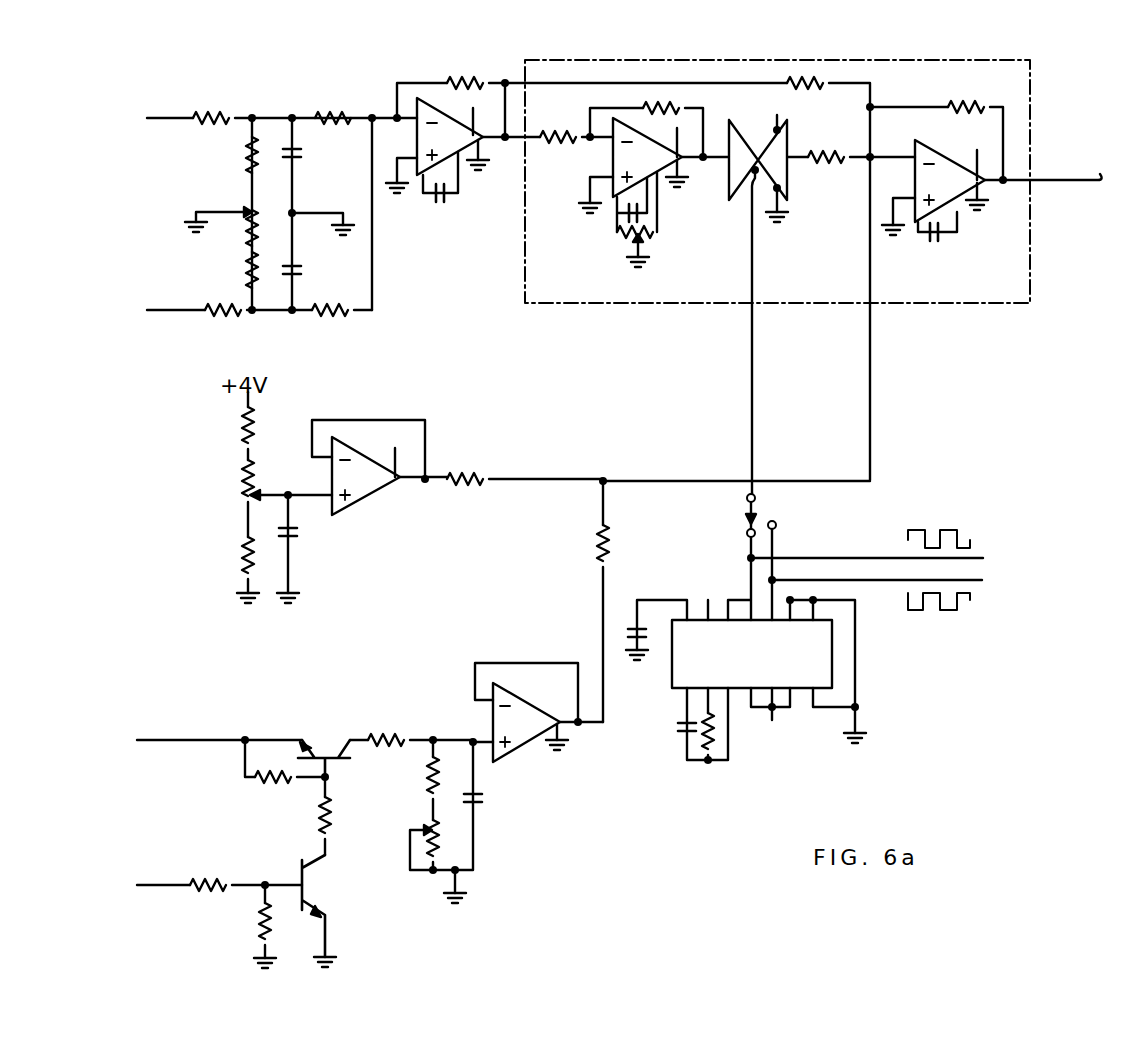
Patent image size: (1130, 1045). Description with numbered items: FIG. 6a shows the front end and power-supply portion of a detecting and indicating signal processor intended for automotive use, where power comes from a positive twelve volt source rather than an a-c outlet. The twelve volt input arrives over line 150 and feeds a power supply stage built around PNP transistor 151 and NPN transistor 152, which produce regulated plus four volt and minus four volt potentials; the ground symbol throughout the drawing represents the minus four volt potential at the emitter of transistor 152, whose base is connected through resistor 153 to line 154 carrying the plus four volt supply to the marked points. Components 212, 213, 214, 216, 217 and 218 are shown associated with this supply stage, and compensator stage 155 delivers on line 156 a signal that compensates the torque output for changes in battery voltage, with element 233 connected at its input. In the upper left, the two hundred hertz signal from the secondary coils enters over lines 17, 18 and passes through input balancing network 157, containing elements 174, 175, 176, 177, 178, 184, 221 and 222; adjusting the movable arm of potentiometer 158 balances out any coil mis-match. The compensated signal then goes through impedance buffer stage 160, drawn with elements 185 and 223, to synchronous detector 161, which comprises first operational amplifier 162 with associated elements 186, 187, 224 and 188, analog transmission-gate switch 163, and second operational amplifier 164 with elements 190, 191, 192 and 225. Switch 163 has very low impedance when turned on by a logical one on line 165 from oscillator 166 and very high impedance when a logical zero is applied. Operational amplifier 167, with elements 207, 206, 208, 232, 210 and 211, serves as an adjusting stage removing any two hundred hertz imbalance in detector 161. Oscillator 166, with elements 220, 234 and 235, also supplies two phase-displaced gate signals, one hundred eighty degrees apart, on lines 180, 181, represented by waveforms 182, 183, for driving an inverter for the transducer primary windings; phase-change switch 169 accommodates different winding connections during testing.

The line 17 is at (178, 125).
The line 18 is at (174, 303).
The input balancing network 157 is at (278, 80).
The resistor 174 is at (212, 116).
The resistor 175 is at (222, 325).
The resistor 176 is at (240, 158).
The resistor 177 is at (250, 276).
The potentiometer 158 is at (243, 206).
The resistor 178 is at (334, 116).
The resistor 184 is at (330, 320).
The capacitor 221 is at (302, 153).
The capacitor 222 is at (302, 272).
The feedback resistor 185 is at (470, 74).
The impedance buffer stage 160 is at (445, 140).
The capacitor 223 is at (440, 200).
The synchronous detector 161 is at (603, 303).
The resistor 186 is at (562, 132).
The feedback resistor 187 is at (644, 105).
The first operational amplifier 162 is at (641, 160).
The capacitor 224 is at (655, 190).
The potentiometer 188 is at (656, 219).
The analog transmission-gate switch 163 is at (752, 128).
The line 165 is at (752, 382).
The resistor 190 is at (798, 80).
The resistor 191 is at (834, 152).
The feedback resistor 192 is at (960, 100).
The second operational amplifier 164 is at (942, 178).
The capacitor 225 is at (934, 240).
The resistor 207 is at (234, 434).
The potentiometer 206 is at (234, 496).
The resistor 208 is at (234, 554).
The capacitor 232 is at (300, 530).
The operational amplifier 167 is at (379, 467).
The resistor 210 is at (466, 475).
The resistor 211 is at (610, 548).
The line 156 is at (600, 634).
The compensator stage 155 is at (525, 712).
The capacitor 233 is at (482, 800).
The line 150 is at (181, 736).
The PNP type transistor 151 is at (340, 739).
The NPN type transistor 152 is at (358, 899).
The resistor 153 is at (201, 879).
The line 154 is at (178, 874).
The resistor 212 is at (276, 792).
The resistor 213 is at (332, 812).
The resistor 214 is at (254, 937).
The resistor 216 is at (390, 740).
The resistor 217 is at (426, 778).
The potentiometer 218 is at (428, 827).
The oscillator circuit 166 is at (751, 661).
The phase-change switch 169 is at (739, 536).
The line 180 is at (866, 556).
The line 181 is at (883, 583).
The waveform 182 is at (952, 530).
The waveform 183 is at (945, 612).
The resistor 220 is at (717, 746).
The capacitor 234 is at (648, 630).
The capacitor 235 is at (676, 728).